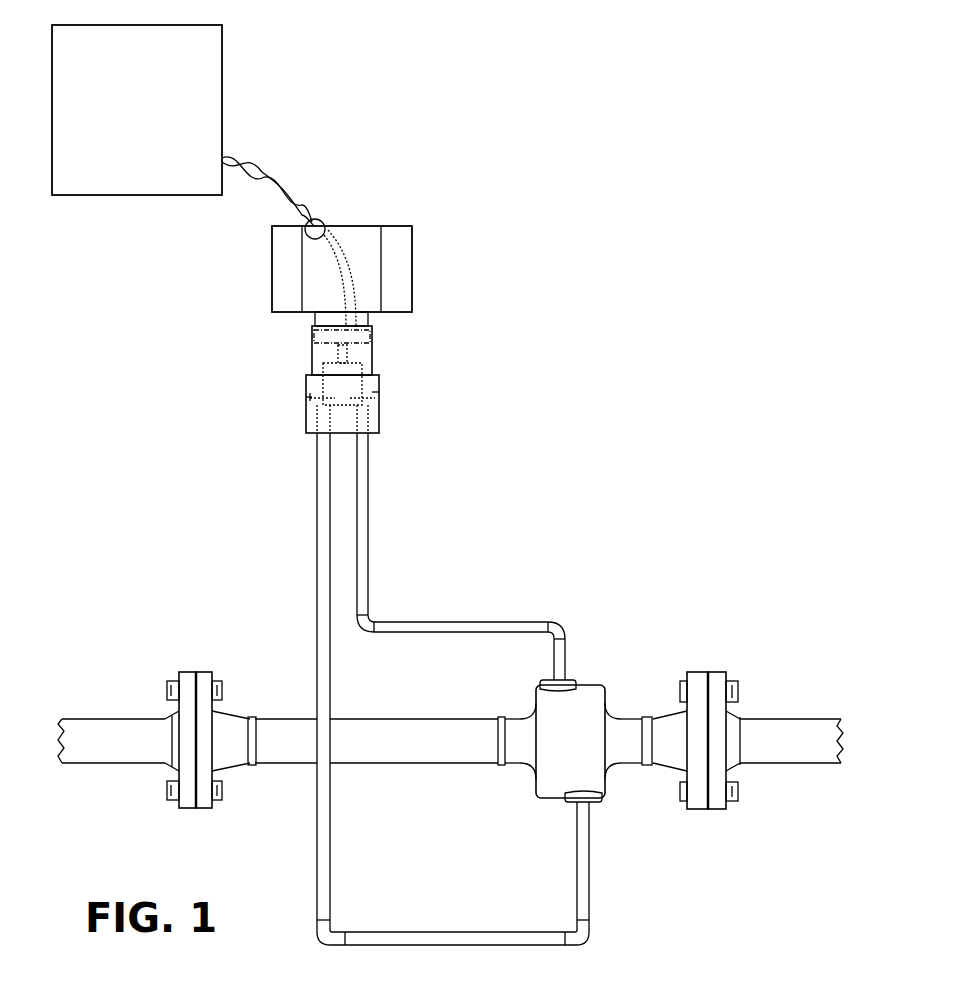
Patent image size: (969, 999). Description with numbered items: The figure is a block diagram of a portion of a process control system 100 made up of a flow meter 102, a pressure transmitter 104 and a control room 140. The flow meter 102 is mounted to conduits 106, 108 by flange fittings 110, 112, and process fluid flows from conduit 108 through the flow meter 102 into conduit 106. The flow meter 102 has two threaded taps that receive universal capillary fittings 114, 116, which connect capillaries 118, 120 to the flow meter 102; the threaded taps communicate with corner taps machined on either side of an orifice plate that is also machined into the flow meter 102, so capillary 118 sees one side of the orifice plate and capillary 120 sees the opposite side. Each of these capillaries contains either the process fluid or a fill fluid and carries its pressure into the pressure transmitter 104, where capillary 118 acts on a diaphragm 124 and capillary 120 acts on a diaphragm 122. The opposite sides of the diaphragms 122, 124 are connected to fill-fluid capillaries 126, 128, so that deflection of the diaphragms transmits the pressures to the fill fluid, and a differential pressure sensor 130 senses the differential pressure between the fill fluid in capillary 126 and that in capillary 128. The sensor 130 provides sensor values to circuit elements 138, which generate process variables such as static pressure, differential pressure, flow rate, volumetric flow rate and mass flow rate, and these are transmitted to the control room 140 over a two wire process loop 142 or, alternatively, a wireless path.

The process control system 100 is at (465, 557).
The flow meter 102 is at (637, 806).
The pressure transmitter 104 is at (283, 427).
The conduit 106 is at (797, 764).
The conduit 108 is at (118, 718).
The flange fitting 110 is at (702, 670).
The flange fitting 112 is at (202, 668).
The universal capillary fitting 114 is at (545, 681).
The universal capillary fitting 116 is at (575, 805).
The capillary 118 is at (566, 646).
The capillary 120 is at (590, 888).
The diaphragm 122 is at (306, 410).
The diaphragm 124 is at (379, 405).
The capillary 126 is at (306, 390).
The capillary 128 is at (379, 392).
The differential pressure sensor 130 is at (312, 355).
The circuit elements 138 is at (313, 330).
The control room 140 is at (222, 62).
The two wire process loop 142 is at (262, 182).